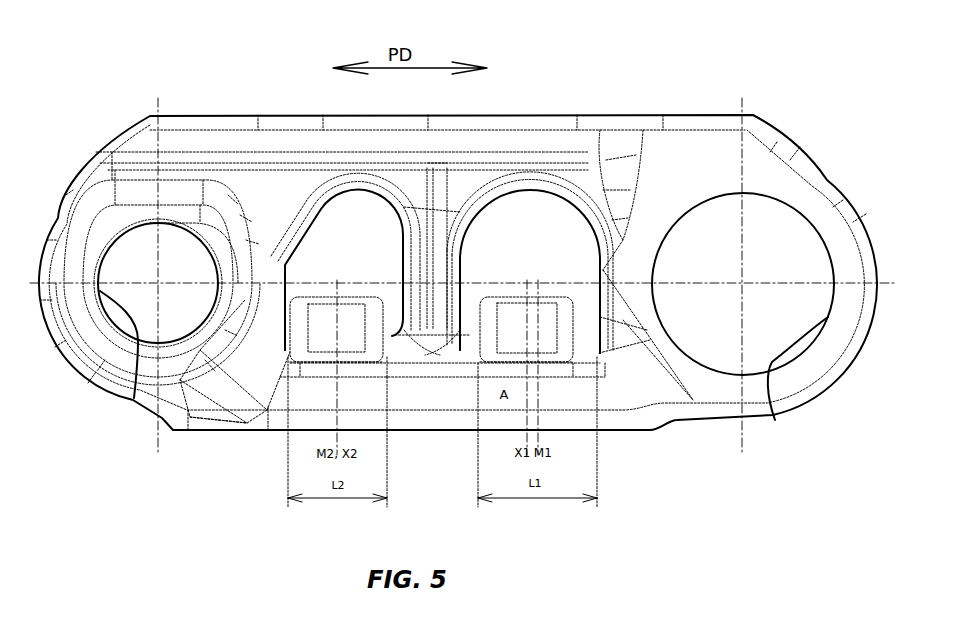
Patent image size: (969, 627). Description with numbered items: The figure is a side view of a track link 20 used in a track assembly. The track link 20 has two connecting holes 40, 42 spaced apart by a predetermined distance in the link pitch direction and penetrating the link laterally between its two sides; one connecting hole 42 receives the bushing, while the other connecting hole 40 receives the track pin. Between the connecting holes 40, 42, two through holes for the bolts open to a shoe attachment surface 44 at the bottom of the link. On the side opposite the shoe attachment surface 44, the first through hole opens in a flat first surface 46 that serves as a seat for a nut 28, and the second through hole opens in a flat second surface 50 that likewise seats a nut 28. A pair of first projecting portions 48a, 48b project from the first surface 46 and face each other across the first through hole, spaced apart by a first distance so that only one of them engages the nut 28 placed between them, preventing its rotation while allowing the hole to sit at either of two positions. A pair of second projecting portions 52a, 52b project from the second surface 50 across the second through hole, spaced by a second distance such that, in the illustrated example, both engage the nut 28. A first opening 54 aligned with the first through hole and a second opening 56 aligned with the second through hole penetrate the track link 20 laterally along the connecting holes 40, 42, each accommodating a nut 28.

The track link 20 is at (107, 142).
The nut 28 is at (310, 348).
The connecting hole 40 is at (134, 398).
The connecting hole 42 is at (775, 420).
The shoe attachment surface 44 is at (428, 432).
The first surface 46 is at (510, 360).
The first projecting portion 48a is at (480, 350).
The first projecting portion 48b is at (597, 347).
The second surface 50 is at (330, 360).
The second projecting portion 52a is at (288, 350).
The second projecting portion 52b is at (383, 355).
The first opening 54 is at (592, 228).
The second opening 56 is at (285, 267).